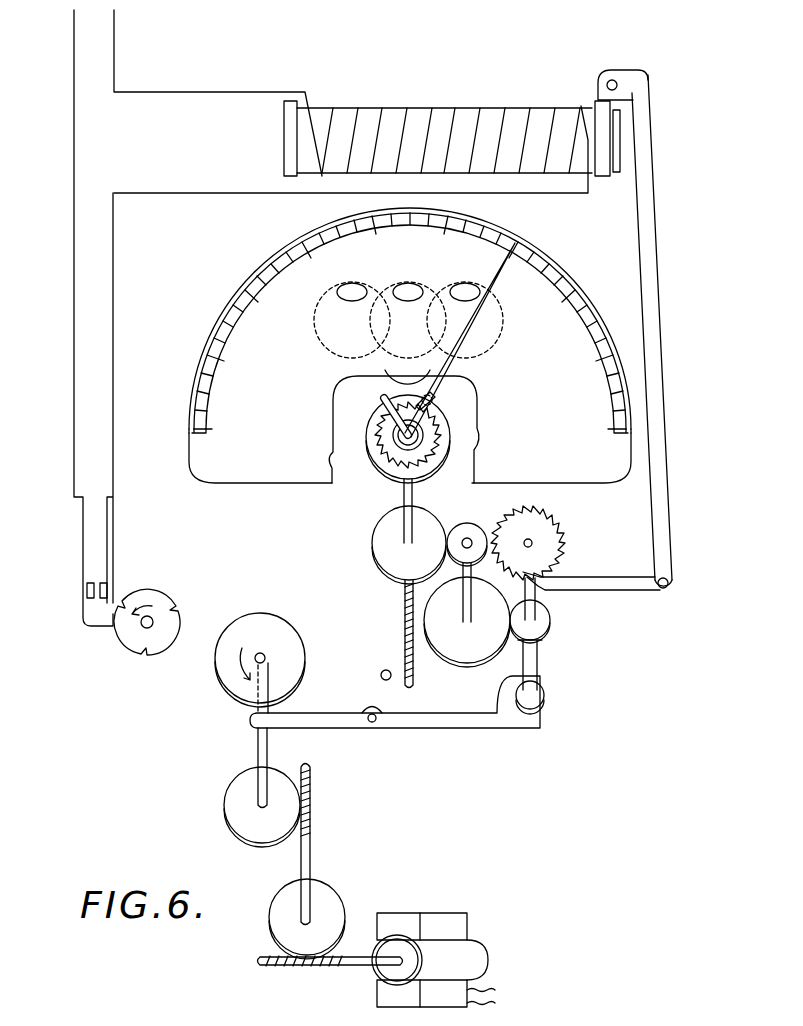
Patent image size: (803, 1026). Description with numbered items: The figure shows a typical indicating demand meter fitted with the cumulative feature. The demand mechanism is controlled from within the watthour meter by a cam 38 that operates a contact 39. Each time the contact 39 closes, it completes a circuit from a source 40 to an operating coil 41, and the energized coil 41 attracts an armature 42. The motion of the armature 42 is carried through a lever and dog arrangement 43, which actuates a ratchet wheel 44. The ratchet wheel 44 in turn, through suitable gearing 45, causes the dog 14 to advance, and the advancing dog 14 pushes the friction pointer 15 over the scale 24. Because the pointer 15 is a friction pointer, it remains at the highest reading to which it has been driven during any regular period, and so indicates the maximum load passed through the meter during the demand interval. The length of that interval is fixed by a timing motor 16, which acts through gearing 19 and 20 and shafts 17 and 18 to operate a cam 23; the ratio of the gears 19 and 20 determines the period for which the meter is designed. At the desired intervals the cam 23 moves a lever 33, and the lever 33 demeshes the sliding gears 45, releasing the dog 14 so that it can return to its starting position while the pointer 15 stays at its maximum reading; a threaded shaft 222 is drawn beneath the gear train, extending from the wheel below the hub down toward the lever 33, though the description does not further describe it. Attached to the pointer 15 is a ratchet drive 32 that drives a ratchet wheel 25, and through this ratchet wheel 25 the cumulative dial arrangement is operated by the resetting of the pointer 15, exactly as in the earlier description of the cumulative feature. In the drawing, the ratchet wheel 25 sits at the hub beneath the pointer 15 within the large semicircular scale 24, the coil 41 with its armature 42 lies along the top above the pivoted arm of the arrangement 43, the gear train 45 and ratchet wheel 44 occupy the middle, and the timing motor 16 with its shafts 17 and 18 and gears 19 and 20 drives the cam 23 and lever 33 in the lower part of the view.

The source 40 is at (91, 35).
The operating coil 41 is at (405, 103).
The armature 42 is at (631, 143).
The lever and dog arrangement 43 is at (665, 462).
The ratchet wheel 44 is at (566, 543).
The gearing 45 is at (452, 525).
The scale 24 is at (494, 233).
The friction pointer 15 is at (491, 297).
The dog 14 is at (381, 398).
The ratchet wheel 25 is at (378, 433).
The ratchet drive 32 is at (433, 398).
The threaded screw shaft 222 is at (405, 622).
The contact 39 is at (97, 583).
The cam 38 is at (126, 652).
The cam 23 is at (222, 676).
The lever 33 is at (400, 728).
The gear 20 is at (298, 782).
The shaft 18 is at (311, 861).
The gear 19 is at (275, 951).
The shaft 17 is at (352, 966).
The timing motor 16 is at (478, 952).